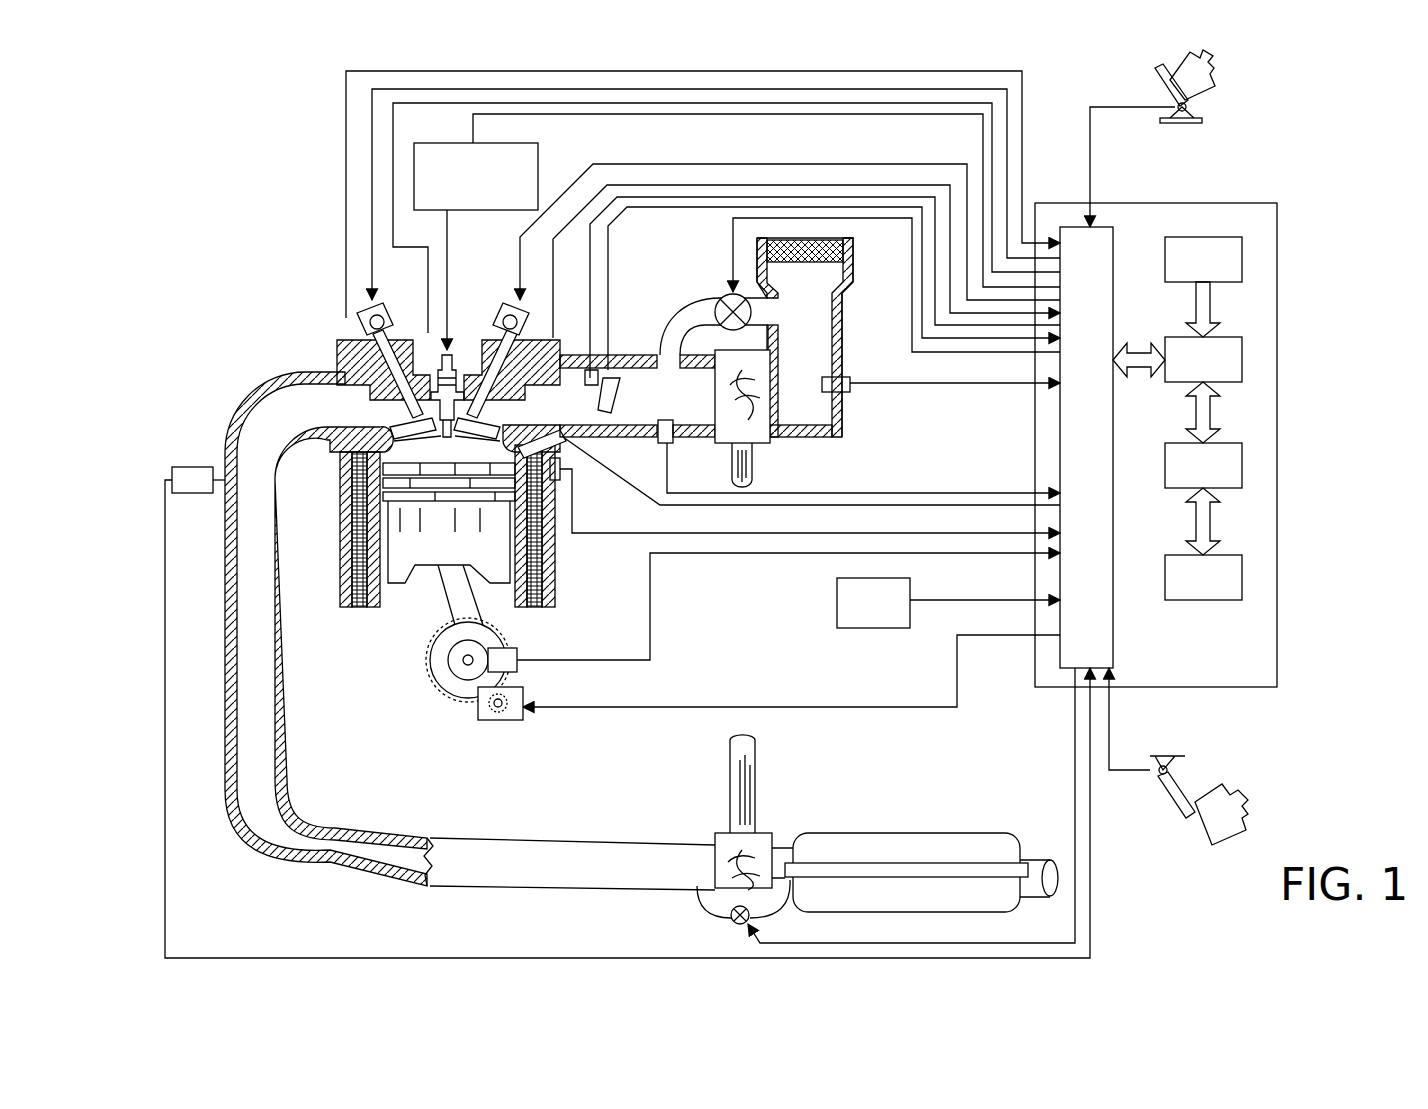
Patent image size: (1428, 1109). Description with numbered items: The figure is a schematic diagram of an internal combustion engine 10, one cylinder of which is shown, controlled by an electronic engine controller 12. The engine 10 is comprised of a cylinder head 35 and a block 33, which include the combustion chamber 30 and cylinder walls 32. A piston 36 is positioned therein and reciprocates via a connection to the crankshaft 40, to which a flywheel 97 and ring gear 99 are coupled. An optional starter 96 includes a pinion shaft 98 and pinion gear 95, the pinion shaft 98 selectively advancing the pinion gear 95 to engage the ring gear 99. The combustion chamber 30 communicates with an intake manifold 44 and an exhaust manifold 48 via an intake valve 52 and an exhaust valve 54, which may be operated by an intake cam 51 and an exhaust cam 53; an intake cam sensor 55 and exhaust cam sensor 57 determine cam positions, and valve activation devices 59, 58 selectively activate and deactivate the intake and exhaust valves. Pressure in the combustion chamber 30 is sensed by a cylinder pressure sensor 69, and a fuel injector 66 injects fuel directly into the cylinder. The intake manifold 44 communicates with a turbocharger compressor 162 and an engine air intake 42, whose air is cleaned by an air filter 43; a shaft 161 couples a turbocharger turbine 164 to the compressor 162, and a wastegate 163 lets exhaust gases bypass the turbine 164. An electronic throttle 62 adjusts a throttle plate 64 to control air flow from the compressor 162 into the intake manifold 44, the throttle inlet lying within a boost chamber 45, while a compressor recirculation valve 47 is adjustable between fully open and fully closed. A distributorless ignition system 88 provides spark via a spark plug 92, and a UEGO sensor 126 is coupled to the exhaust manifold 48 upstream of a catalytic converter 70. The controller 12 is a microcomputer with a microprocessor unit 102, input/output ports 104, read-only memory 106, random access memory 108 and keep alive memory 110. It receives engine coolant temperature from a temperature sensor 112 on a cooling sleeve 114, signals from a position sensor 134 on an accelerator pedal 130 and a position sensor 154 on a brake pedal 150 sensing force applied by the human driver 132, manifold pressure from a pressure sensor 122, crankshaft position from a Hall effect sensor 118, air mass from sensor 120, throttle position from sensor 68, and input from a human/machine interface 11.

The internal combustion engine 10 is at (270, 290).
The human/machine interface 11 is at (948, 603).
The electronic engine controller 12 is at (1277, 203).
The combustion chamber 30 is at (403, 447).
The cylinder walls 32 is at (385, 590).
The block 33 is at (340, 487).
The cylinder head 35 is at (338, 340).
The piston 36 is at (425, 548).
The crankshaft 40 is at (452, 690).
The engine air intake 42 is at (672, 262).
The air filter 43 is at (812, 262).
The intake manifold 44 is at (561, 413).
The boost chamber 45 is at (663, 409).
The compressor recirculation valve 47 is at (724, 298).
The exhaust manifold 48 is at (292, 418).
The intake cam 51 is at (520, 300).
The intake valve 52 is at (488, 404).
The exhaust cam 53 is at (372, 305).
The exhaust valve 54 is at (370, 395).
The intake cam sensor 55 is at (530, 318).
The exhaust cam sensor 57 is at (355, 320).
The valve activation device 58 is at (385, 327).
The valve activation device 59 is at (510, 330).
The electronic throttle 62 is at (611, 398).
The throttle plate 64 is at (608, 410).
The fuel injector 66 is at (562, 476).
The throttle position sensor 68 is at (562, 372).
The cylinder pressure sensor 69 is at (447, 438).
The catalytic converter 70 is at (838, 833).
The distributorless ignition system 88 is at (538, 153).
The spark plug 92 is at (447, 340).
The pinion gear 95 is at (506, 718).
The starter 96 is at (516, 720).
The flywheel 97 is at (443, 655).
The pinion shaft 98 is at (494, 714).
The ring gear 99 is at (462, 700).
The microprocessor unit 102 is at (1242, 360).
The input/output ports 104 is at (1100, 232).
The read-only memory 106 is at (1242, 258).
The random access memory 108 is at (1242, 465).
The keep alive memory 110 is at (1242, 575).
The temperature sensor 112 is at (566, 490).
The cooling sleeve 114 is at (545, 545).
The Hall effect sensor 118 is at (516, 650).
The air mass sensor 120 is at (848, 378).
The pressure sensor 122 is at (662, 445).
The Universal Exhaust Gas Oxygen sensor 126 is at (172, 472).
The accelerator pedal 130 is at (1160, 100).
The human driver 132 is at (1215, 62).
The position sensor 134 is at (1202, 110).
The brake pedal 150 is at (1186, 818).
The position sensor 154 is at (1152, 768).
The shaft 161 is at (730, 458).
The turbocharger compressor 162 is at (758, 445).
The wastegate 163 is at (734, 925).
The turbocharger turbine 164 is at (722, 833).